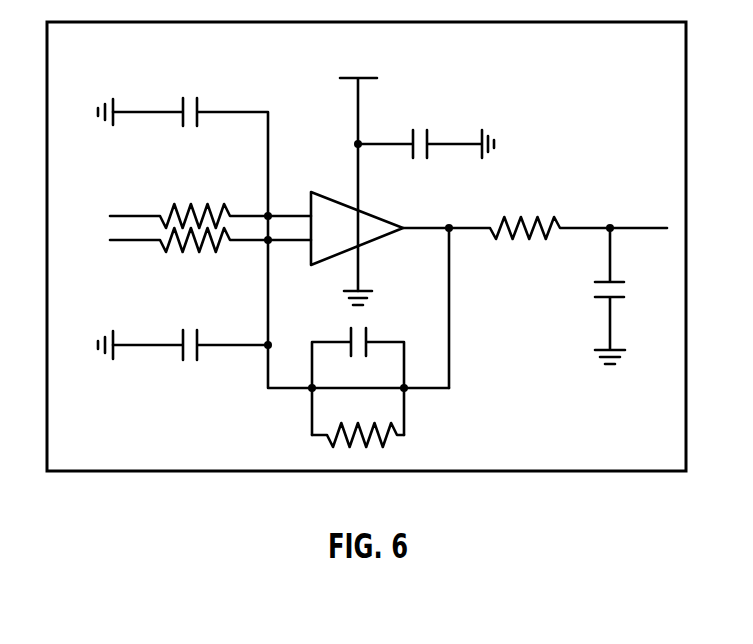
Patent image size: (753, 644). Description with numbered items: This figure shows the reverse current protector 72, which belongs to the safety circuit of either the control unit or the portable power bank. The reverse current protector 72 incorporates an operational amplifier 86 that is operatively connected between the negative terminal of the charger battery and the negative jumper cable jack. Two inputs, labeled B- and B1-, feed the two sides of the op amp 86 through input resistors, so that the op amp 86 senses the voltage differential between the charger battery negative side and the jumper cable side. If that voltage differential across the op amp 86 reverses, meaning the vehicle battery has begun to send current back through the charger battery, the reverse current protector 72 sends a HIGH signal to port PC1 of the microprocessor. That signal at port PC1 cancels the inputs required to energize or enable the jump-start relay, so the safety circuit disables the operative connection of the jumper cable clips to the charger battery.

The reverse current protector 72 is at (324, 100).
The operational amplifier 86 is at (378, 254).
The battery negative input B- is at (200, 208).
The battery 1 negative input B1- is at (194, 248).
The port PC1 is at (638, 214).